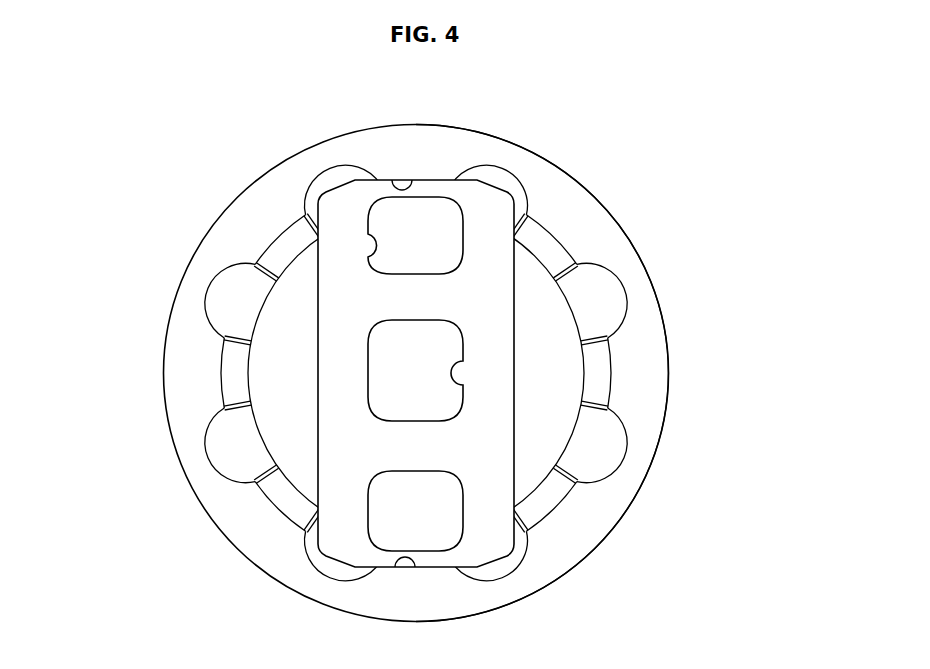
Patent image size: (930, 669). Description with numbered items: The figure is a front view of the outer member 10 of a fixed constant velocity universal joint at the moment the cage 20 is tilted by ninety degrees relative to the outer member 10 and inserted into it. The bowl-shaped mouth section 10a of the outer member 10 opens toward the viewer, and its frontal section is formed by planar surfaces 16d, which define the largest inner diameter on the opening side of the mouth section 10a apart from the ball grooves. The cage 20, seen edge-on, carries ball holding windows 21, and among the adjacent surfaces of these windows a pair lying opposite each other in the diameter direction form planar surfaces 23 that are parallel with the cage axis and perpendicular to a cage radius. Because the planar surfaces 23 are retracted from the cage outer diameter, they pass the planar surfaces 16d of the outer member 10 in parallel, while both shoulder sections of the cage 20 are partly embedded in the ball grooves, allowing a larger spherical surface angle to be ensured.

The outer member 10 is at (225, 208).
The mouth section 10a is at (652, 275).
The cage 20 is at (517, 270).
The ball holding window 21 is at (378, 252).
The planar surface 23 is at (435, 180).
The planar surface 16d is at (393, 183).